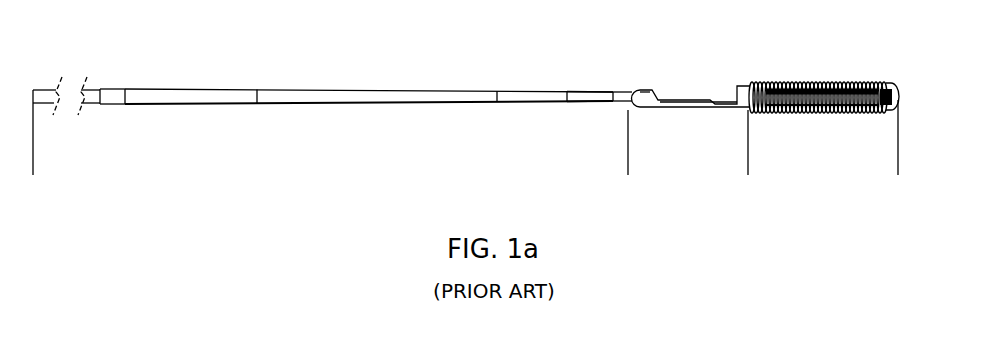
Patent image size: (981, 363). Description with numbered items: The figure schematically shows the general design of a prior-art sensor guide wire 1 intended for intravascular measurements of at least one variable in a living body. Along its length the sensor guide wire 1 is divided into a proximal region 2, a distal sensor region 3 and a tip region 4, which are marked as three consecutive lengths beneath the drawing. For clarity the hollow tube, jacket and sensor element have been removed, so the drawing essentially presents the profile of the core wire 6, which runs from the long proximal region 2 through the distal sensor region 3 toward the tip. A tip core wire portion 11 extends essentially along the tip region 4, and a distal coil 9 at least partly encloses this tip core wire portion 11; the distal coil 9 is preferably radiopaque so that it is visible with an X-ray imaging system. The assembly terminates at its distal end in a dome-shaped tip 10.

The sensor guide wire 1 is at (394, 49).
The proximal region 2 is at (628, 167).
The distal sensor region 3 is at (748, 167).
The tip region 4 is at (898, 167).
The core wire 6 is at (560, 93).
The distal coil 9 is at (765, 83).
The dome-shaped tip 10 is at (892, 85).
The tip core wire portion 11 is at (832, 83).